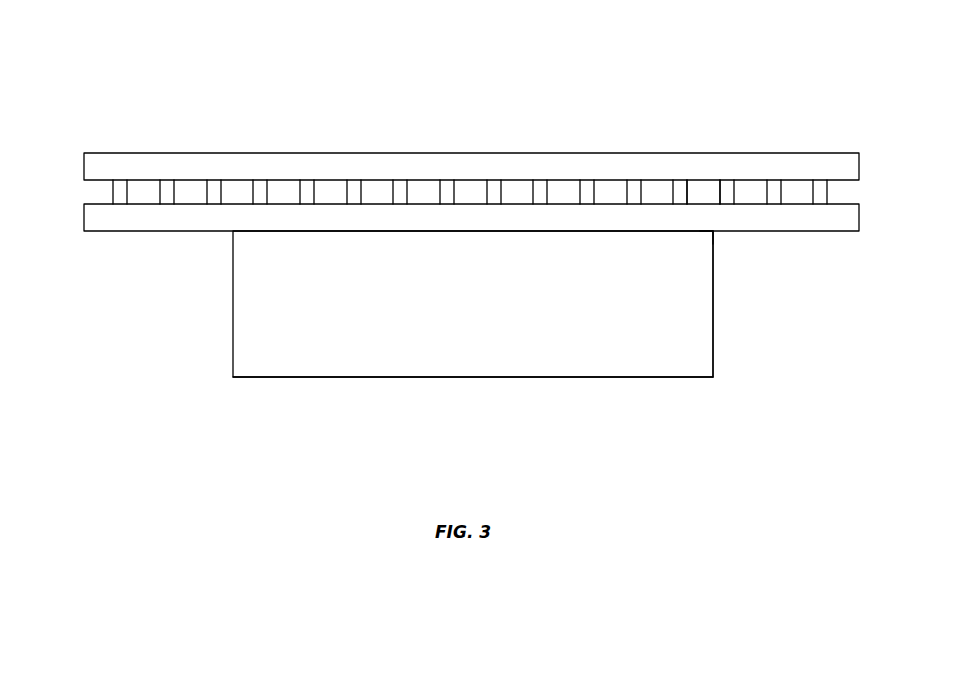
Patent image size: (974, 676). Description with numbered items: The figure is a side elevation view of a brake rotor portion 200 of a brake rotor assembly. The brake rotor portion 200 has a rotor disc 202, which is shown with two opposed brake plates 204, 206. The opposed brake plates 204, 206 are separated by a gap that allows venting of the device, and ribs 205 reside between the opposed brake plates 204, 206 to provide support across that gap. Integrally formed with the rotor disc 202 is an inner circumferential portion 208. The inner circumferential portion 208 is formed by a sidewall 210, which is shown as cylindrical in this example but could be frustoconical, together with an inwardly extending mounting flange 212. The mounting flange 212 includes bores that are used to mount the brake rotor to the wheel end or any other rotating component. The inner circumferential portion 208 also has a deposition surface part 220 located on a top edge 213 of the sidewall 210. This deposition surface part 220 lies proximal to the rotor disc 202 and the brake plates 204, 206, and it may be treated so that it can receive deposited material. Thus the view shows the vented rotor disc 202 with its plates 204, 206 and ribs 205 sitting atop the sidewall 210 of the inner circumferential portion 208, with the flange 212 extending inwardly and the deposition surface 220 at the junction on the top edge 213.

The brake rotor portion 200 is at (903, 118).
The rotor disc 202 is at (862, 153).
The brake plate 204 is at (105, 163).
The ribs 205 is at (438, 193).
The brake plate 206 is at (832, 218).
The inner circumferential portion 208 is at (473, 304).
The sidewall 210 is at (713, 330).
The inwardly extending mounting flange 212 is at (372, 377).
The top edge of the sidewall 213 is at (707, 238).
The deposition surface part 220 is at (705, 187).